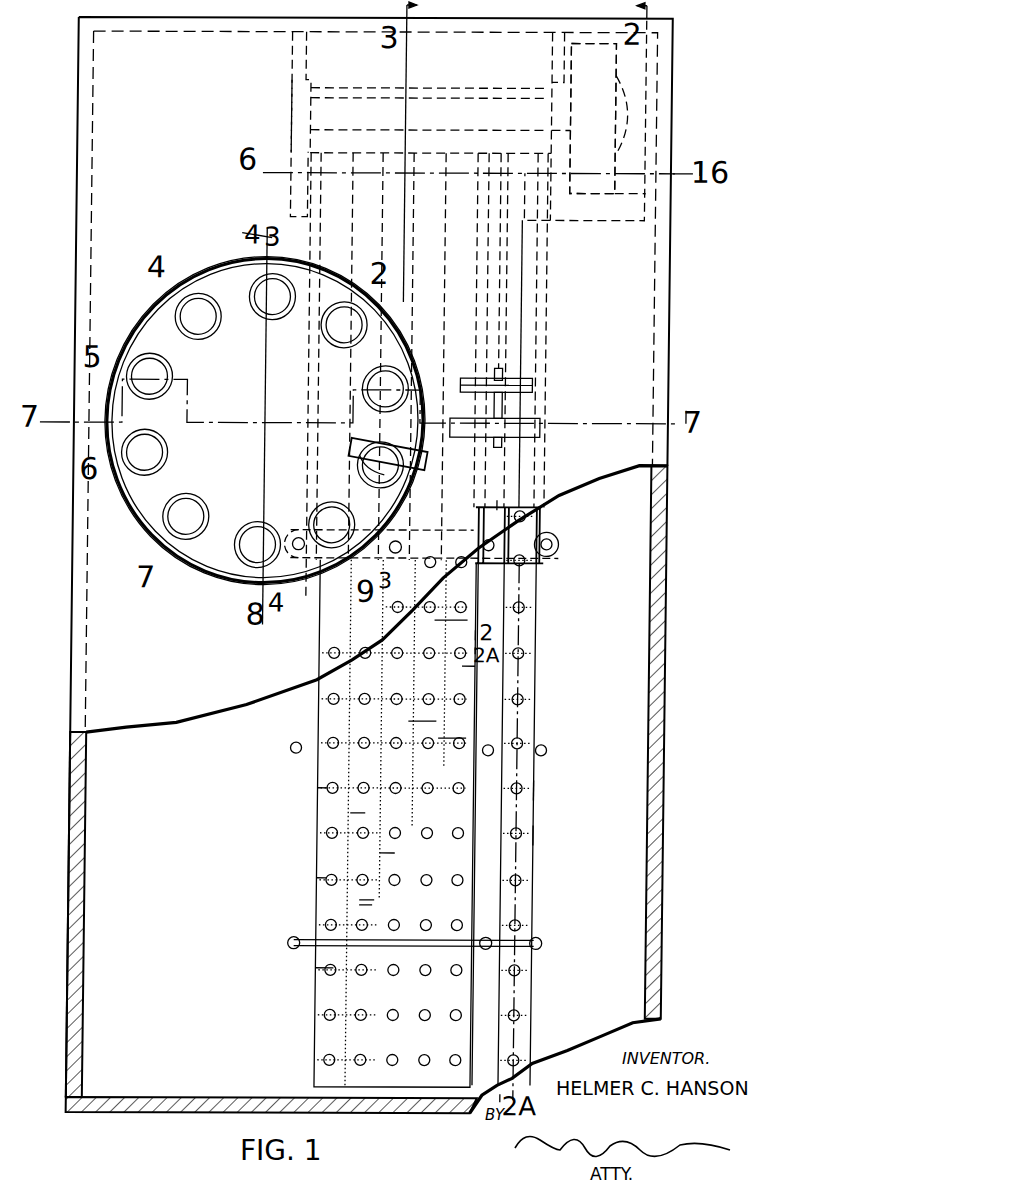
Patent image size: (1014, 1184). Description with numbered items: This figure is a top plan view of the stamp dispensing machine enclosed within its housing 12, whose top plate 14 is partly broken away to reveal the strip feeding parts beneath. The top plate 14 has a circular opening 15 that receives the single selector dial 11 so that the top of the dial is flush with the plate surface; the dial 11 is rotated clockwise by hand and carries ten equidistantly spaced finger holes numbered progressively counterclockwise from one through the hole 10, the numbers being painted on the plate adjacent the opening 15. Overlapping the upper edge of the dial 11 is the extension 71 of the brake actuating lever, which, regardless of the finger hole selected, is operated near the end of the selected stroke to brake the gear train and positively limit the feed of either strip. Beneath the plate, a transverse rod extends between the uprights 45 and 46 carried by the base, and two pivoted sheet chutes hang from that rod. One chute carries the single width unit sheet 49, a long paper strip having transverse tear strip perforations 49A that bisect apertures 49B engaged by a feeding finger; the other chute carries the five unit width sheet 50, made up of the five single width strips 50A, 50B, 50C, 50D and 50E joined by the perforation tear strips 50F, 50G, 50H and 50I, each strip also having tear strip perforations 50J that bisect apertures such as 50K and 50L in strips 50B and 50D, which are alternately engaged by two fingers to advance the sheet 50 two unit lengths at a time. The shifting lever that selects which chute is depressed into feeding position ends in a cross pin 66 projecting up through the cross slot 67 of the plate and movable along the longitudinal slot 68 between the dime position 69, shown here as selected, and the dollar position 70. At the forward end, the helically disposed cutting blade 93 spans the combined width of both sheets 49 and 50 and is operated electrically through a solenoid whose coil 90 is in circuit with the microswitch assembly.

The finger hole number ten 10 is at (495, 521).
The single selector dial 11 is at (212, 265).
The housing 12 is at (70, 825).
The top plate 14 is at (88, 173).
The circular opening 15 is at (135, 517).
The upright 45 is at (290, 108).
The upright 46 is at (560, 118).
The single width unit sheet 49 is at (538, 870).
The transverse tear strip perforations 49A is at (530, 790).
The apertures 49B is at (533, 838).
The five unit width sheet 50 is at (318, 715).
The single width strip 50A is at (330, 787).
The single width strip 50B is at (362, 813).
The single width strip 50C is at (395, 853).
The single width strip 50D is at (437, 621).
The single width strip 50E is at (465, 667).
The perforation tear strip 50F is at (345, 900).
The perforation tear strip 50G is at (375, 905).
The perforation tear strip 50H is at (412, 721).
The perforation tear strip 50I is at (442, 738).
The tear strip perforations 50J is at (330, 878).
The aperture 50K is at (355, 966).
The aperture 50L is at (432, 922).
The cross pin 66 is at (530, 382).
The cross slot 67 is at (538, 420).
The longitudinal slot 68 is at (503, 405).
The dime position 69 is at (502, 372).
The dollar position 70 is at (503, 443).
The extension of lever 71 is at (362, 452).
The coil 90 is at (620, 180).
The cutting blade 93 is at (455, 102).